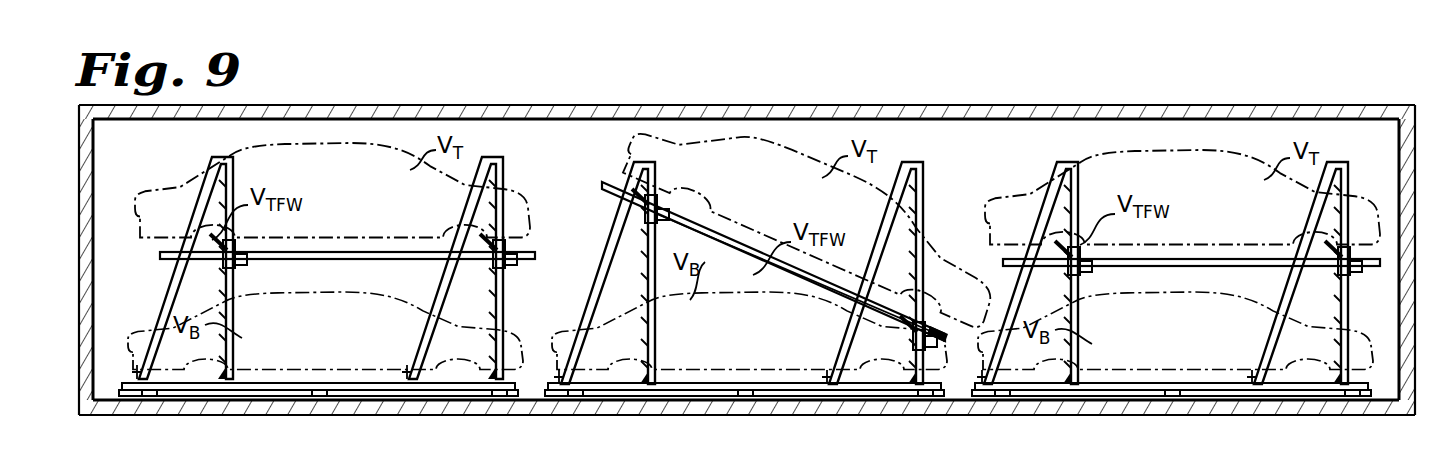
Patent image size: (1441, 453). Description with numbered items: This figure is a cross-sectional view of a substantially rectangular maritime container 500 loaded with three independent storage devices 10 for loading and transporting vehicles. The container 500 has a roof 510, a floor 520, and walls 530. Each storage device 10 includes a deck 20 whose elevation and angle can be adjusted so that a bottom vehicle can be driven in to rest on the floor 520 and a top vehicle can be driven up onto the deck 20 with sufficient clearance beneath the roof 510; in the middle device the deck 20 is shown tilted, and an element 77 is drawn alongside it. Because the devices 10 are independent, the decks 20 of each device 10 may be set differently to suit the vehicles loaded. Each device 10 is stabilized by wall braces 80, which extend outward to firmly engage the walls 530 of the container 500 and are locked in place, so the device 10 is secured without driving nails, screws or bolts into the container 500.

The storage device 10 is at (194, 167).
The deck 20 is at (345, 259).
The tilt strut 77 is at (940, 329).
The wall brace 80 is at (235, 271).
The container 500 is at (741, 242).
The roof 510 is at (804, 111).
The floor 520 is at (806, 406).
The walls 530 is at (573, 130).